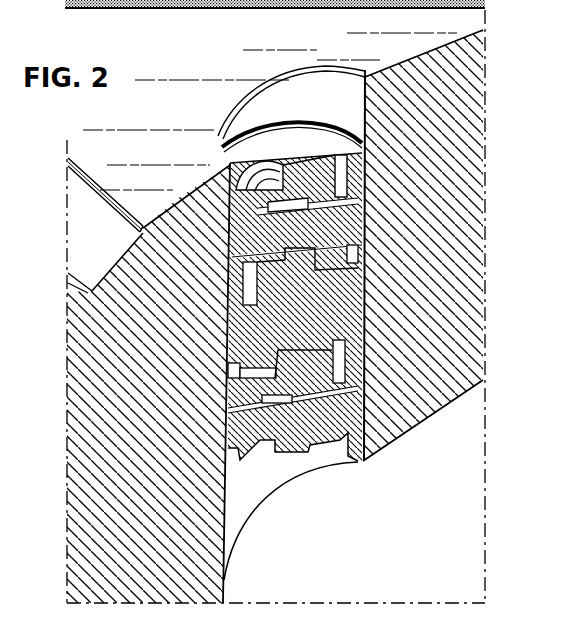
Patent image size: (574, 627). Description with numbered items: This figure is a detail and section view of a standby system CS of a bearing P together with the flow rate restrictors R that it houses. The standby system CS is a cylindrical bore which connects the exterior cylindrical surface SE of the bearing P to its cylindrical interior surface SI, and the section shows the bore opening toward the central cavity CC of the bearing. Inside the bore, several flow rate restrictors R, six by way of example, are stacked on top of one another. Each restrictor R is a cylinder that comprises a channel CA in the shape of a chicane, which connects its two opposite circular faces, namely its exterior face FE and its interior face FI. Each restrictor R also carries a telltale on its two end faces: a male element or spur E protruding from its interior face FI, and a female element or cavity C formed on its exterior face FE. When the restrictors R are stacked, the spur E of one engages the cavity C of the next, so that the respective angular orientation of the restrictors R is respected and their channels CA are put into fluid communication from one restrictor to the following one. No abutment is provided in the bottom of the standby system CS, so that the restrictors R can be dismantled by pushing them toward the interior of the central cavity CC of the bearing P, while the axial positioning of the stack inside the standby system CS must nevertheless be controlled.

The exterior cylindrical surface SE is at (385, 42).
The bearing P is at (166, 118).
The cylindrical interior surface SI is at (429, 418).
The interior face FI is at (249, 228).
The flow rate restrictor R is at (248, 219).
The spur E is at (341, 266).
The channel CA is at (345, 180).
The cavity C is at (255, 188).
The exterior face FE is at (290, 150).
The standby system CS is at (273, 465).
The central cavity CC is at (387, 503).